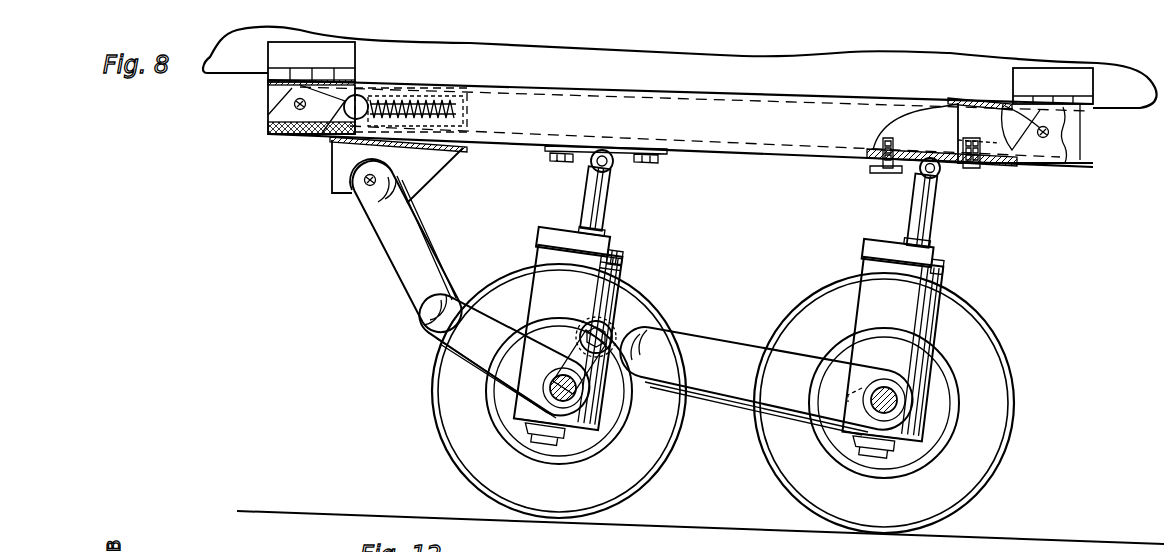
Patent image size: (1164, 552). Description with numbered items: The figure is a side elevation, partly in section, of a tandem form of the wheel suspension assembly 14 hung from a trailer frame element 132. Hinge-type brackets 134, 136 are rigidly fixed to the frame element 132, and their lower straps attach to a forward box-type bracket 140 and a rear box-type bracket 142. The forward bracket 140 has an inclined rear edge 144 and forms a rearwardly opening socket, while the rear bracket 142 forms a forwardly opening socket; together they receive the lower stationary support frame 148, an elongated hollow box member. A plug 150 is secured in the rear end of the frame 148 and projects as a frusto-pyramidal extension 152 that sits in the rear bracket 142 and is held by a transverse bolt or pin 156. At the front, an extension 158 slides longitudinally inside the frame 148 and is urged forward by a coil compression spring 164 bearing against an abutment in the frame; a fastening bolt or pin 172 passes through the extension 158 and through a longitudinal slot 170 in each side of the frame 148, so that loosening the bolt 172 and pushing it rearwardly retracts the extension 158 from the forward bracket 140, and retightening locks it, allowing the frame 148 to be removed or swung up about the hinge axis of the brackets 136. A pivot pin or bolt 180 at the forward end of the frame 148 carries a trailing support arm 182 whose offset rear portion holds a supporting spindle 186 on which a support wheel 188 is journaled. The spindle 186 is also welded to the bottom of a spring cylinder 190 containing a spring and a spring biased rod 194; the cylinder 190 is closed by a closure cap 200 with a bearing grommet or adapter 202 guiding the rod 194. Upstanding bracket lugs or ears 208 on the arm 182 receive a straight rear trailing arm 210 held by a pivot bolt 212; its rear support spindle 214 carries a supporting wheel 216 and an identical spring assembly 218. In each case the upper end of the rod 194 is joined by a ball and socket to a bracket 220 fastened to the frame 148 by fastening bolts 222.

The wheel suspension assembly 14 is at (376, 278).
The trailer frame element 132 is at (1125, 105).
The bracket 134 is at (282, 58).
The bracket 136 is at (1083, 88).
The forward box-type bracket 140 is at (268, 116).
The rear box-type bracket 142 is at (1080, 148).
The inclined rear edge 144 is at (313, 133).
The lower stationary support frame 148 is at (736, 157).
The plug 150 is at (1010, 143).
The frusto-pyramidal extension 152 is at (1033, 145).
The transverse bolt or pin 156 is at (1004, 104).
The extension 158 is at (295, 123).
The coil compression spring 164 is at (402, 100).
The longitudinal slot 170 is at (387, 130).
The fastening bolt or pin 172 is at (353, 103).
The pivot pin or bolt 180 is at (363, 188).
The trailing support arm 182 is at (402, 275).
The supporting spindle 186 is at (550, 383).
The support wheel 188 is at (630, 312).
The spring cylinder 190 is at (630, 282).
The spring biased rod 194 is at (603, 222).
The closure cap 200 is at (630, 251).
The bearing grommet or adapter 202 is at (577, 230).
The upstanding bracket lugs or ears 208 is at (626, 378).
The rear trailing arm 210 is at (727, 376).
The pivot bolt 212 is at (584, 327).
The support spindle 214 is at (867, 398).
The supporting wheel 216 is at (988, 362).
The spring assembly 218 is at (956, 321).
The bracket 220 is at (628, 130).
The fastening bolts 222 is at (880, 170).